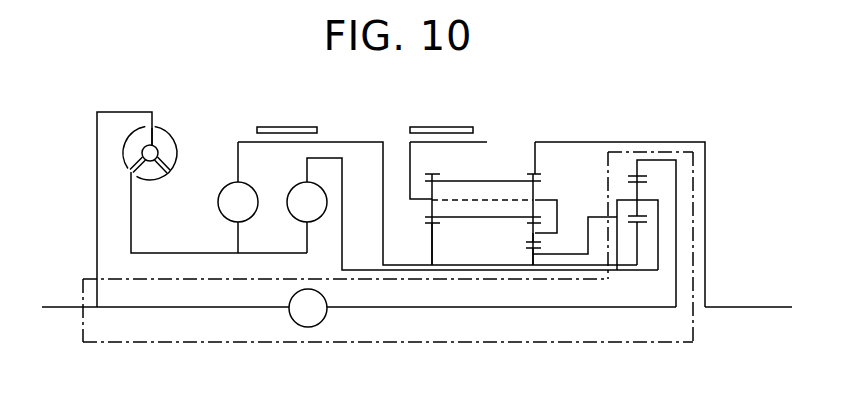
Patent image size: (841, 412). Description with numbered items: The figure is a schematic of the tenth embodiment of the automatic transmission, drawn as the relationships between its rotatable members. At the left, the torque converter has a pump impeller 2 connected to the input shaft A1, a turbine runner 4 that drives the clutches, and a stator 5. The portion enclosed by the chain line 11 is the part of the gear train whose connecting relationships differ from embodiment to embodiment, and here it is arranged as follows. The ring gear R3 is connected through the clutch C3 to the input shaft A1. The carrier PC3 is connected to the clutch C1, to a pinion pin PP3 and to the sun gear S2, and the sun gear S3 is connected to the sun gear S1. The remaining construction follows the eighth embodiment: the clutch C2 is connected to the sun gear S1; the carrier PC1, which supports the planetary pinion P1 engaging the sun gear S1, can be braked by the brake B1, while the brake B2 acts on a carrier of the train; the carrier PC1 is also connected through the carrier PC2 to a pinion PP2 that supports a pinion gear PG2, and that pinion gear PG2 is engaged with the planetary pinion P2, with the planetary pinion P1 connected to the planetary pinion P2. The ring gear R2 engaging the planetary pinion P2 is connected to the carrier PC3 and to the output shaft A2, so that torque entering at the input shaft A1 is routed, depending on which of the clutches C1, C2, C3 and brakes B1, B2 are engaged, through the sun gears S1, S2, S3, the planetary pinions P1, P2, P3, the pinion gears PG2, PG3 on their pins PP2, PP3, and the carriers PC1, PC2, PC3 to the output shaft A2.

The pump impeller 2 is at (177, 152).
The turbine runner 4 is at (127, 166).
The stator 5 is at (151, 181).
The chain line 11 is at (687, 348).
The input shaft A1 is at (76, 308).
The output shaft A2 is at (770, 307).
The brake B1 is at (441, 117).
The brake B2 is at (287, 117).
The clutch C1 is at (472, 214).
The clutch C2 is at (238, 197).
The clutch C3 is at (386, 308).
The planetary pinion P1 is at (432, 188).
The carrier PC1 is at (411, 206).
The sun gear S1 is at (432, 240).
The planetary pinion P2 is at (527, 174).
The carrier PC2 is at (543, 199).
The ring gear R2 is at (535, 158).
The pinion gear PG2 is at (537, 223).
The pinion PP2 is at (548, 236).
The sun gear S2 is at (537, 250).
The planetary pinion P3 is at (640, 188).
The carrier PC3 is at (628, 197).
The ring gear R3 is at (655, 160).
The pinion gear PG3 is at (640, 227).
The pinion pin PP3 is at (640, 236).
The sun gear S3 is at (638, 256).